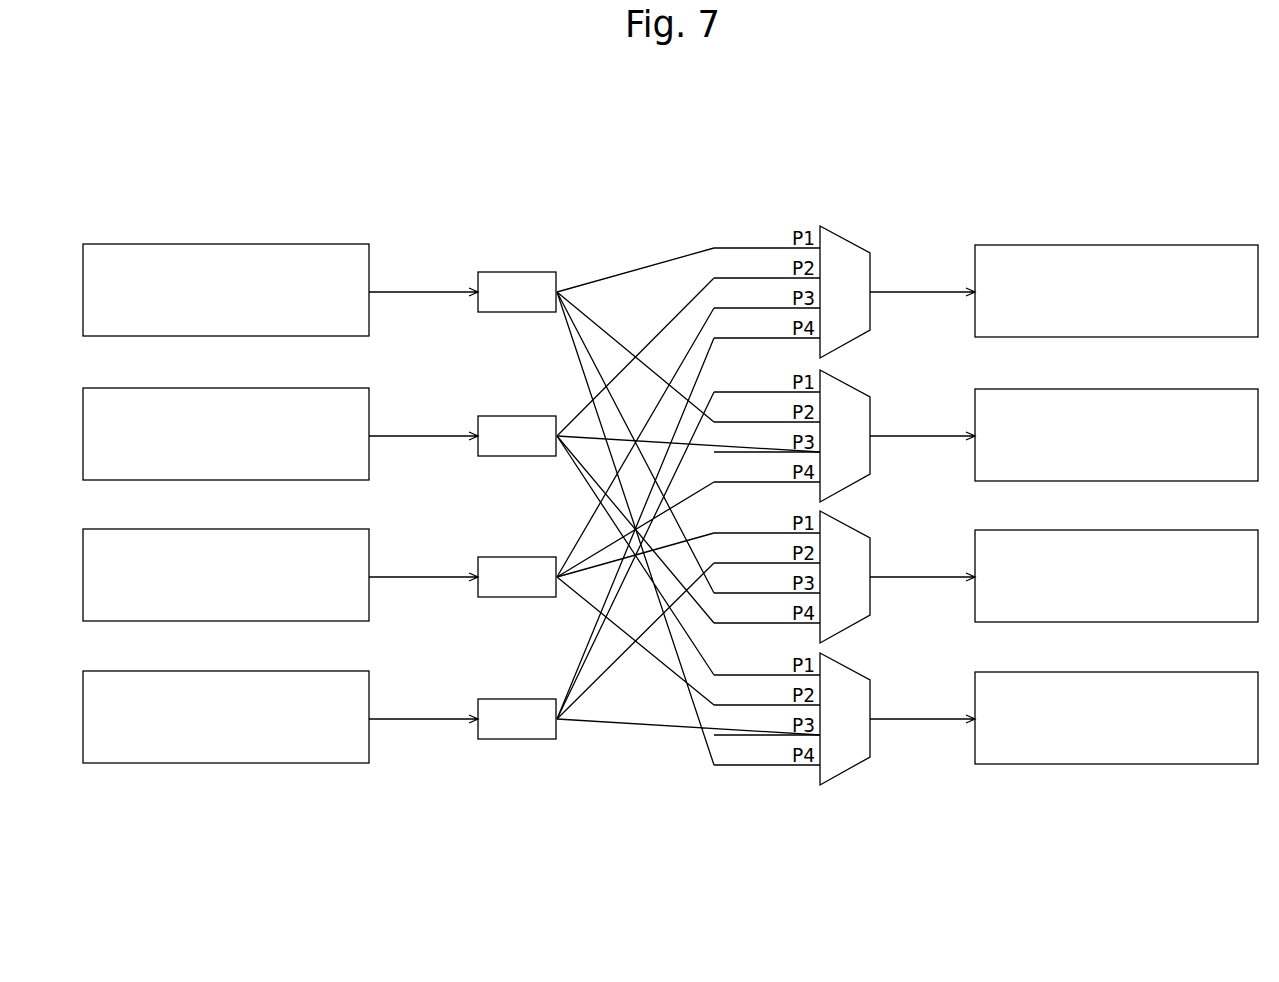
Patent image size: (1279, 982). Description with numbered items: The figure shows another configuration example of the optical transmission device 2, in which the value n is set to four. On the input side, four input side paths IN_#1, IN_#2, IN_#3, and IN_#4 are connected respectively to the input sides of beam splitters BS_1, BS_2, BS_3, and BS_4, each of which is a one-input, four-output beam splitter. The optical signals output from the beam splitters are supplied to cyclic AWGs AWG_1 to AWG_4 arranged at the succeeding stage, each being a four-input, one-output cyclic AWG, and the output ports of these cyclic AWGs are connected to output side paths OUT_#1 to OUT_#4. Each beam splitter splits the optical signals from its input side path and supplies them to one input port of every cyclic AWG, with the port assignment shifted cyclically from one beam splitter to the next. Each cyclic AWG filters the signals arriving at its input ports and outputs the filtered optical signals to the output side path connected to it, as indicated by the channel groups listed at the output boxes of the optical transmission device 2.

The optical transmission device 2 is at (910, 151).
The input port IN_#1 with beam splitter BS_ 1 is at (462, 284).
The input port IN_#3 with beam splitter BS_ 3 is at (462, 569).
The input port IN_#4 with beam splitter BS_ 4 is at (462, 711).